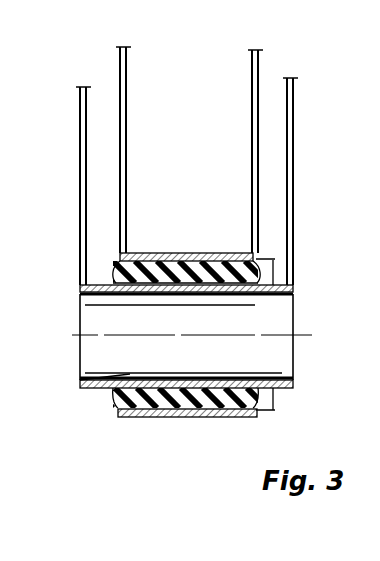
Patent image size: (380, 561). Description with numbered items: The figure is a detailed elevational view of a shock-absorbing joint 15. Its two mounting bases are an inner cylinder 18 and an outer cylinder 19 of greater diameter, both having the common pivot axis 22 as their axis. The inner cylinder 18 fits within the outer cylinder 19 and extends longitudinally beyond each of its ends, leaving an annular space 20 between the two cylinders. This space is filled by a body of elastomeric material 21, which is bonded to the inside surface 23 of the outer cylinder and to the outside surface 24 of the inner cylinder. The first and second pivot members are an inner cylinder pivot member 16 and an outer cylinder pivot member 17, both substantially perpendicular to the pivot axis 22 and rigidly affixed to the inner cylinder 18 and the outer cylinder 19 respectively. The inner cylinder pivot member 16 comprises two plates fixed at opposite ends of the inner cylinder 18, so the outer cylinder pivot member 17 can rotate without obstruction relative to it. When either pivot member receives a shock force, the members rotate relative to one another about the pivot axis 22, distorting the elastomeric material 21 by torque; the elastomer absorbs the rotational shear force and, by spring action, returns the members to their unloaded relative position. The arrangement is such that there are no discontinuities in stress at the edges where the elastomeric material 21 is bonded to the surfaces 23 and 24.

The shock-absorbing joint 15 is at (171, 445).
The inner cylinder pivot member 16 is at (79, 130).
The outer cylinder pivot member 17 is at (250, 132).
The inner cylinder 18 is at (294, 290).
The outer cylinder 19 is at (139, 259).
The annular space 20 is at (278, 271).
The body of elastomeric material 21 is at (198, 258).
The common pivot axis 22 is at (300, 338).
The inside surface of the outer cylinder 23 is at (82, 375).
The outside surface of the inner cylinder 24 is at (213, 418).